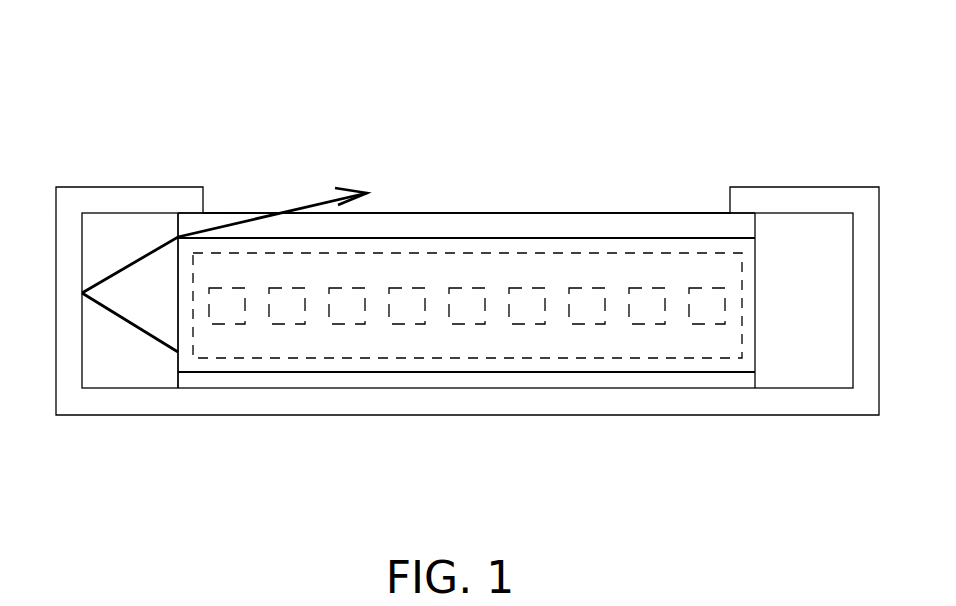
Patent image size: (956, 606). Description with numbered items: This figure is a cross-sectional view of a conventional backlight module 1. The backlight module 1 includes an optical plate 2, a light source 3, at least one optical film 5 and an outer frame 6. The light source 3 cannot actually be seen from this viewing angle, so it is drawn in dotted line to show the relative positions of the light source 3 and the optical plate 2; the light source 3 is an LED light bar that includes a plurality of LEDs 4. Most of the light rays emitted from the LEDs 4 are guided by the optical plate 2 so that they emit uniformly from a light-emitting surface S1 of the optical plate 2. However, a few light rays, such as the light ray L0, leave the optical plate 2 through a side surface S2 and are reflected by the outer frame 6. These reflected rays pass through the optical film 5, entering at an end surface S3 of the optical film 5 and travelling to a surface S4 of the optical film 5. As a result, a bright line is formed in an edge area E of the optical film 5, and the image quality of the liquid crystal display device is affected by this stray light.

The backlight module 1 is at (756, 82).
The optical plate 2 is at (483, 367).
The light source 3 is at (412, 340).
The LEDs 4 is at (415, 287).
The optical film 5 is at (483, 230).
The outer frame 6 is at (112, 197).
The light-emitting surface S1 is at (637, 237).
The side surface S2 is at (178, 362).
The end surface S3 is at (178, 226).
The surface S4 is at (557, 213).
The edge area E is at (237, 213).
The light ray L0 is at (233, 255).